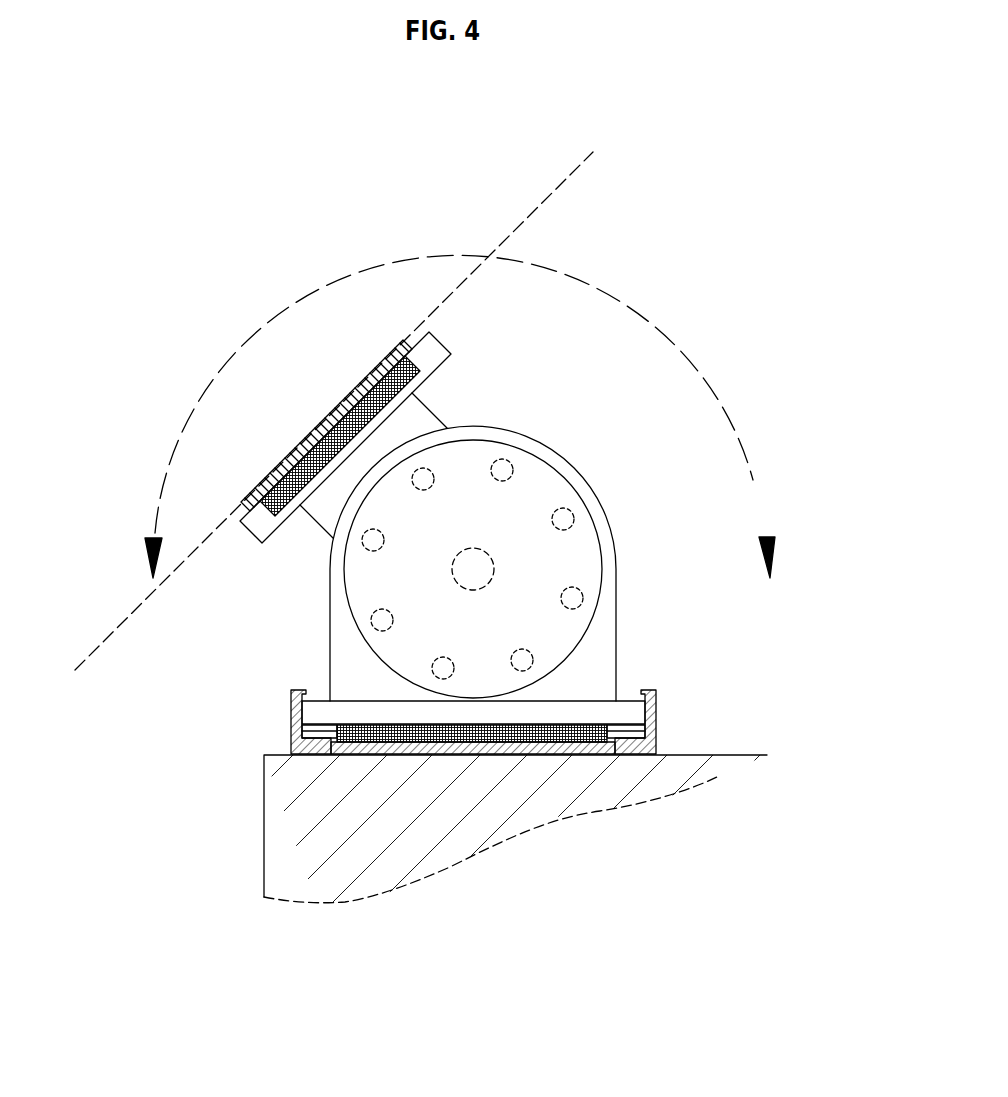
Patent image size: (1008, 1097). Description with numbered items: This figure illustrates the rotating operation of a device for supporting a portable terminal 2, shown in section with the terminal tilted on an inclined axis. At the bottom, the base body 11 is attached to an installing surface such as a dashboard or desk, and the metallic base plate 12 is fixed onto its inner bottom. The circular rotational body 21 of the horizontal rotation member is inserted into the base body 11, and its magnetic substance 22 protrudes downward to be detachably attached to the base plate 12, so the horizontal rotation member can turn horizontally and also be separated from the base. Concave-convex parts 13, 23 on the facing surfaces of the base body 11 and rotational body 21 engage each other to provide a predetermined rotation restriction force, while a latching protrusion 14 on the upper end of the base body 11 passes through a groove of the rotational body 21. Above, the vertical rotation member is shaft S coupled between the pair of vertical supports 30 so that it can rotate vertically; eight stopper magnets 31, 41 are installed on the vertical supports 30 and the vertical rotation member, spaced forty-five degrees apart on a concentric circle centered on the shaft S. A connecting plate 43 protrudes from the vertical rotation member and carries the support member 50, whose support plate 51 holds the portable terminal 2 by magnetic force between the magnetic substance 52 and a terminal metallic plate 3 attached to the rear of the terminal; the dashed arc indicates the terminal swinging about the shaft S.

The portable terminal 2 is at (510, 237).
The terminal metallic plate 3 is at (317, 432).
The support member 50 is at (439, 393).
The support plate 51 is at (451, 350).
The magnetic substance 52 is at (383, 396).
The stopper magnet 31 is at (472, 569).
The stopper magnet 41 is at (507, 467).
The shaft S is at (491, 568).
The vertical support 30 is at (565, 533).
The connecting plate 43 is at (325, 520).
The rotational body 21 is at (401, 712).
The magnetic substance 22 is at (489, 737).
The base plate 12 is at (555, 748).
The latching protrusion 14 is at (300, 690).
The concave-convex part 13 is at (636, 736).
The concave-convex part 23 is at (635, 726).
The base body 11 is at (296, 741).